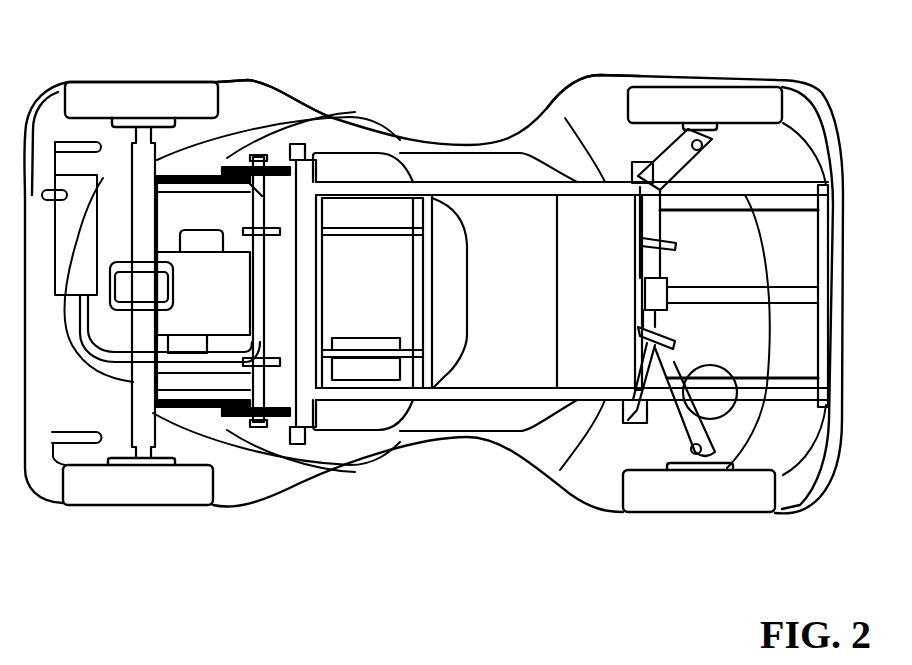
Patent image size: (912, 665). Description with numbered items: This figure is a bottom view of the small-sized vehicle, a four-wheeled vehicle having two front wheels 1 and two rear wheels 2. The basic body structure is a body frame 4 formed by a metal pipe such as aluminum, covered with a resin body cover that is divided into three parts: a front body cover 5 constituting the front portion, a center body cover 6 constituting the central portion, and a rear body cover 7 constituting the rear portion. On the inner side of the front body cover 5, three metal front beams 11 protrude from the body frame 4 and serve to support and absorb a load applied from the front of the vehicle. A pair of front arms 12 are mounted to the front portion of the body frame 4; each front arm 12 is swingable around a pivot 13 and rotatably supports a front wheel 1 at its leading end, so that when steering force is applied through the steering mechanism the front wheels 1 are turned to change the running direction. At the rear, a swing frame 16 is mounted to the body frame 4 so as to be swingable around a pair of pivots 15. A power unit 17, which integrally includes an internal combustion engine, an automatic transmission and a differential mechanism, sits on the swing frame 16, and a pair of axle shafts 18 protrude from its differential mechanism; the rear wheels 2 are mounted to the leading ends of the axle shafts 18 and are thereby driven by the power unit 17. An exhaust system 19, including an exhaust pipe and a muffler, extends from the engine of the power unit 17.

The front wheel 1 is at (680, 97).
The rear wheel 2 is at (108, 97).
The body frame 4 is at (493, 188).
The front body cover 5 is at (609, 77).
The center body cover 6 is at (399, 141).
The rear body cover 7 is at (233, 80).
The front beam 11 is at (788, 203).
The front arm 12 is at (712, 140).
The pivot 13 is at (677, 236).
The pivot 15 is at (303, 148).
The swing frame 16 is at (170, 182).
The power unit 17 is at (165, 251).
The axle shaft 18 is at (143, 203).
The exhaust system 19 is at (77, 308).